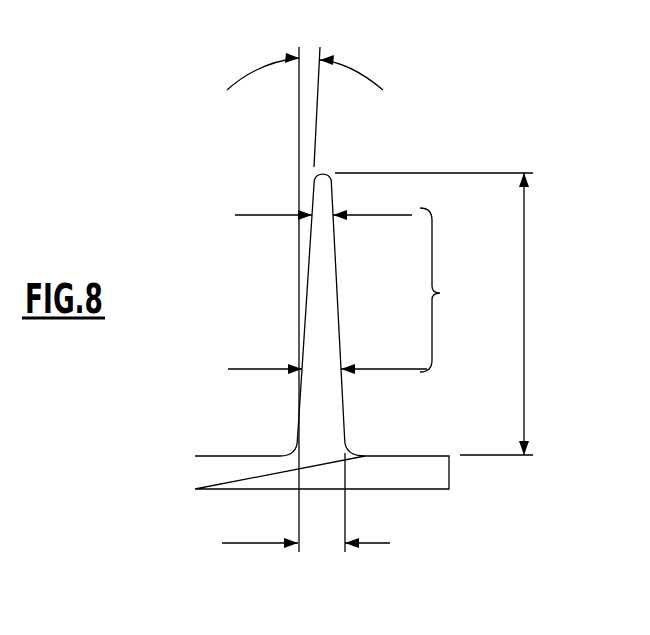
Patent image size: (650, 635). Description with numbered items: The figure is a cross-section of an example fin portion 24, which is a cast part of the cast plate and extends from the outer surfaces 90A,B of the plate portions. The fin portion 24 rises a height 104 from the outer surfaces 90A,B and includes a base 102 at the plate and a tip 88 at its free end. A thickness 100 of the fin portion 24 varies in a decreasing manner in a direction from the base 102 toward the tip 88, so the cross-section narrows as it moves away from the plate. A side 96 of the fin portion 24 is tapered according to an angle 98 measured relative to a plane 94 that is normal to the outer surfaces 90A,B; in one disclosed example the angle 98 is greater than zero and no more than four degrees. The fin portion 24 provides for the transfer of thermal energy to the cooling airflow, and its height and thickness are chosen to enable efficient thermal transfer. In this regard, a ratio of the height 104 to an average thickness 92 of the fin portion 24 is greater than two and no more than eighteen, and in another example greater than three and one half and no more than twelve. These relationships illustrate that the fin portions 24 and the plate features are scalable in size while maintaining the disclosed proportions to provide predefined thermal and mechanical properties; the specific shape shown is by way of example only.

The fin portion 24 is at (485, 90).
The tip 88 is at (330, 168).
The outer surfaces 90A,B is at (237, 453).
The average thickness 92 is at (254, 543).
The plane 94 is at (299, 113).
The side 96 is at (307, 283).
The angle 98 is at (248, 72).
The thickness 100 is at (438, 293).
The base 102 is at (368, 447).
The height 104 is at (524, 303).